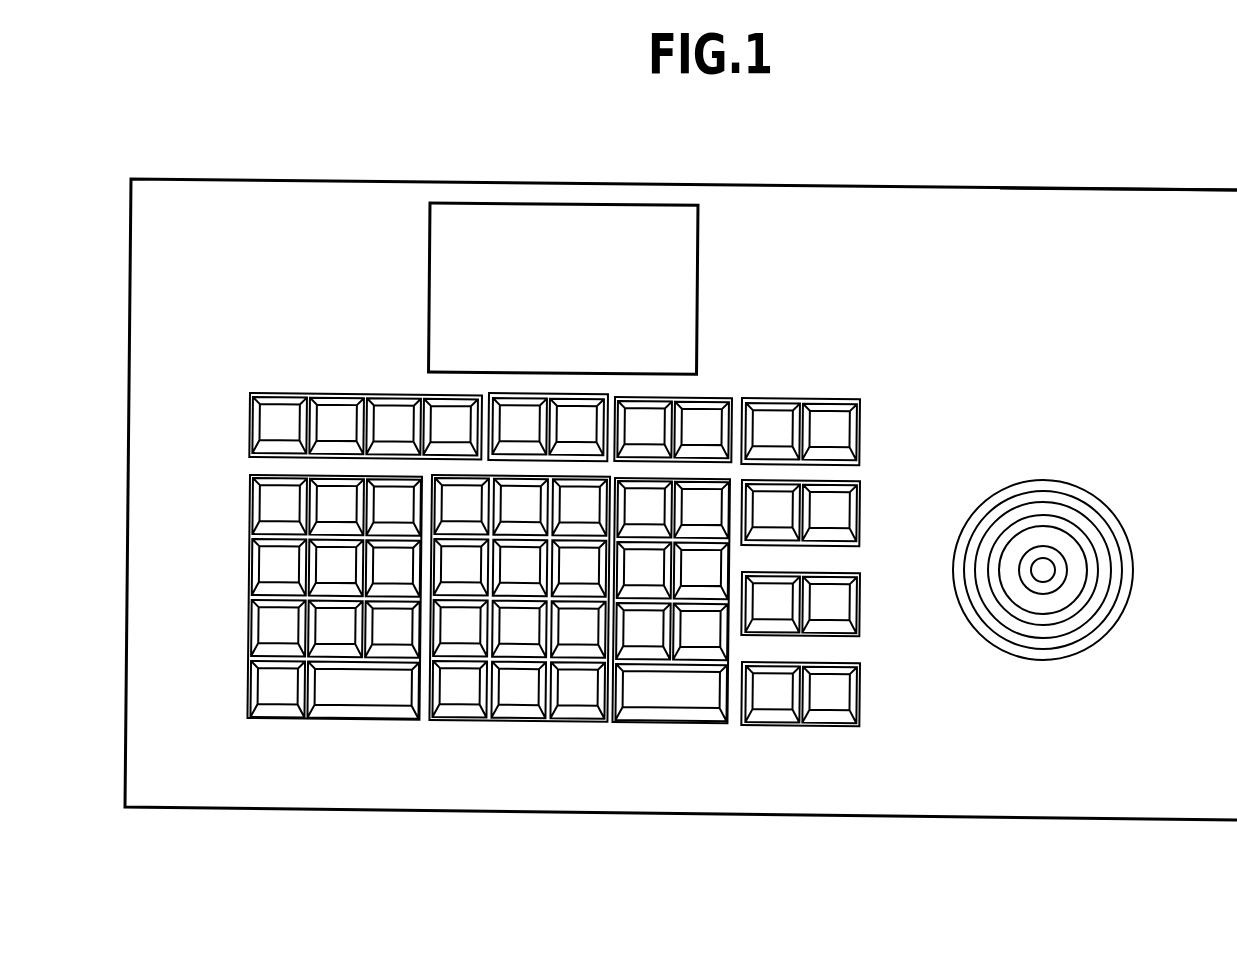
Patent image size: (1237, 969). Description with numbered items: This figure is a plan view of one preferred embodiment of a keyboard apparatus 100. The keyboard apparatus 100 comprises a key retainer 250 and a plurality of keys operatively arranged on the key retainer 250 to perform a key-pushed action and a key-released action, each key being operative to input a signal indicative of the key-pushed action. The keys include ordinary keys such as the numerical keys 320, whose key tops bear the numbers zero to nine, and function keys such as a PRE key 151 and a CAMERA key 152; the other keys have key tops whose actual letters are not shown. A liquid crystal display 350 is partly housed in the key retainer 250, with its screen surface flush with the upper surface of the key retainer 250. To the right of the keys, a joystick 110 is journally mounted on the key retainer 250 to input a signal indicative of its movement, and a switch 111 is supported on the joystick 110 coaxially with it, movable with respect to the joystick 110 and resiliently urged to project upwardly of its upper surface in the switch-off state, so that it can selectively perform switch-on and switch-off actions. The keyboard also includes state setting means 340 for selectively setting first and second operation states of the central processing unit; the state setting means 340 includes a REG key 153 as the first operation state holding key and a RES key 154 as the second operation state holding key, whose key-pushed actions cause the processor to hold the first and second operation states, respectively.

The keyboard apparatus 100 is at (581, 125).
The key retainer 250 is at (1093, 220).
The liquid crystal display 350 is at (698, 263).
The joystick 110 is at (1048, 546).
The switch 111 is at (1047, 575).
The PRE key 151 is at (320, 507).
The CAMERA key 152 is at (707, 700).
The REG key 153 is at (465, 702).
The RES key 154 is at (583, 703).
The numerical keys 320 is at (522, 740).
The state setting means 340 is at (573, 740).